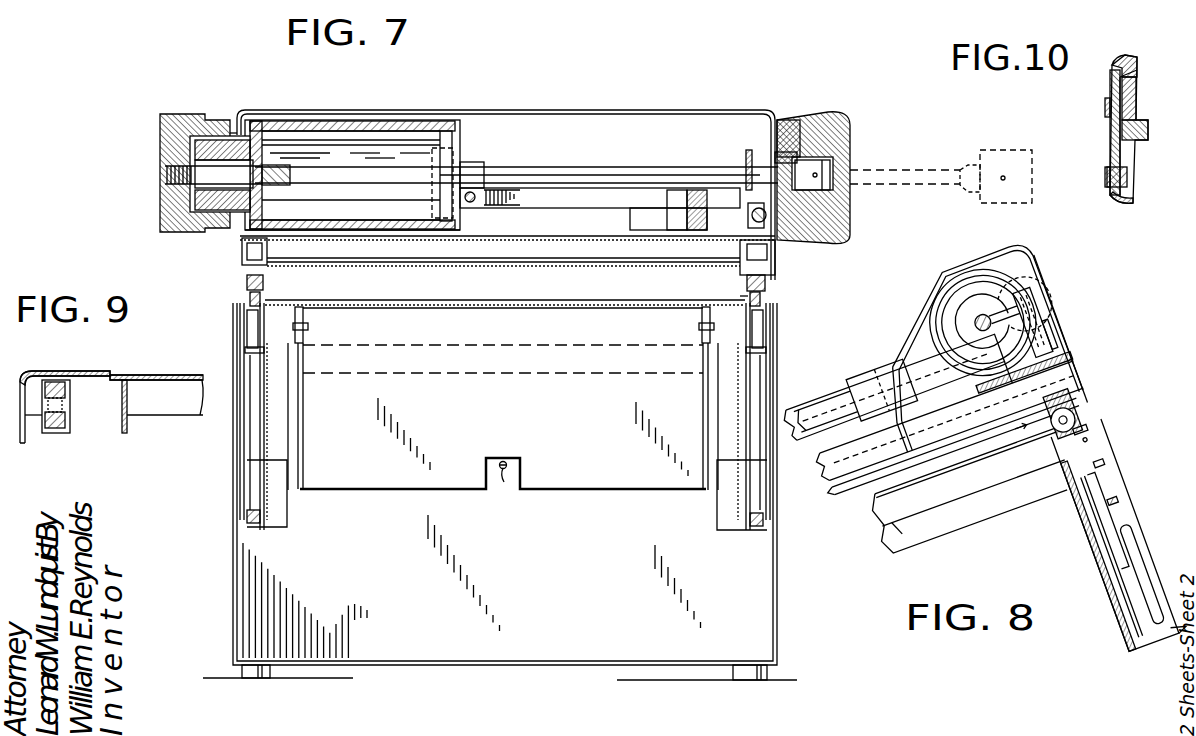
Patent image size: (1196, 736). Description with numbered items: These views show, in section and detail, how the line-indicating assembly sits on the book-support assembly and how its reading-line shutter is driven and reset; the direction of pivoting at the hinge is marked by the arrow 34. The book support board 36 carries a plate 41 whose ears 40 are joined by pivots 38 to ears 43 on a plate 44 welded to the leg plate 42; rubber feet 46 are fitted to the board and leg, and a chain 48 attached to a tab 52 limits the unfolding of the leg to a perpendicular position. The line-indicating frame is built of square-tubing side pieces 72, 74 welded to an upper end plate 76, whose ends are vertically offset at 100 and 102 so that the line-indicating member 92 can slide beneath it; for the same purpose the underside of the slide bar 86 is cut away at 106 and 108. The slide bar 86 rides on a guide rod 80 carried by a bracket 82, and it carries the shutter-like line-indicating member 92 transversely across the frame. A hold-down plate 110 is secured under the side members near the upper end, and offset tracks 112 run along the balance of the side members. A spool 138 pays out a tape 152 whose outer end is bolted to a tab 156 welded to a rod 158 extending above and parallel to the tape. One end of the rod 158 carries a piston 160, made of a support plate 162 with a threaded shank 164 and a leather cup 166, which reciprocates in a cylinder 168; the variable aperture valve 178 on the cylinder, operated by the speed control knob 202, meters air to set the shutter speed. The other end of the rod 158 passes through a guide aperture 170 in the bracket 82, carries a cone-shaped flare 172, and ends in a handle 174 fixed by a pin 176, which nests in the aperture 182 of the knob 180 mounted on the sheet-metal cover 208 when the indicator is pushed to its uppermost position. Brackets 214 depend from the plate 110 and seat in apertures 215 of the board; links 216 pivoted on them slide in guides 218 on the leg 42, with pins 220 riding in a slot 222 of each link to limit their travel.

In FIG. 7, the pivot direction arrow 34 is at (732, 292).
In FIG. 8, the pivot direction arrow 34 is at (1020, 427).
In FIG. 7, the book support board 36 is at (292, 300).
In FIG. 8, the book support board 36 is at (969, 492).
In FIG. 7, the pivots 38 is at (308, 327).
In FIG. 8, the pivots 38 is at (1082, 434).
In FIG. 7, the ears 40 is at (296, 314).
In FIG. 8, the ears 40 is at (897, 528).
In FIG. 7, the plate 41 is at (492, 307).
In FIG. 8, the plate 41 is at (966, 462).
In FIG. 7, the leg plate 42 is at (546, 561).
In FIG. 9, the leg plate 42 is at (152, 372).
In FIG. 8, the leg plate 42 is at (1119, 533).
In FIG. 7, the ears 43 is at (303, 358).
In FIG. 9, the ears 43 is at (130, 435).
In FIG. 7, the plate 44 is at (612, 421).
In FIG. 9, the plate 44 is at (148, 385).
In FIG. 7, the rubber feet 46 is at (262, 680).
In FIG. 7, the chain 48 is at (503, 482).
In FIG. 7, the tab 52 is at (512, 460).
In FIG. 7, the side piece 72 is at (240, 252).
In FIG. 7, the side piece 74 is at (768, 256).
In FIG. 8, the side piece 74 is at (973, 360).
In FIG. 7, the upper end plate 76 is at (522, 238).
In FIG. 8, the upper end plate 76 is at (948, 422).
In FIG. 7, the guide rod 80 is at (766, 218).
In FIG. 8, the guide rod 80 is at (826, 411).
In FIG. 7, the bracket 82 is at (750, 212).
In FIG. 8, the bracket 82 is at (1018, 354).
In FIG. 8, the slide bar 86 is at (896, 397).
In FIG. 8, the line-indicating member 92 is at (881, 390).
In FIG. 7, the offset 100 is at (275, 234).
In FIG. 7, the offset 102 is at (740, 246).
In FIG. 8, the cut-away 106 is at (830, 492).
In FIG. 8, the cut-away 108 is at (954, 419).
In FIG. 7, the plate 110 is at (576, 250).
In FIG. 8, the plate 110 is at (955, 446).
In FIG. 8, the tracks 112 is at (800, 421).
In FIG. 7, the spool 138 is at (650, 218).
In FIG. 7, the tape 152 is at (552, 198).
In FIG. 7, the tab 156 is at (472, 165).
In FIG. 7, the rod 158 is at (580, 170).
In FIG. 8, the rod 158 is at (1019, 327).
In FIG. 7, the piston 160 is at (290, 135).
In FIG. 10, the piston 160 is at (1146, 50).
In FIG. 10, the support plate 162 is at (1137, 82).
In FIG. 7, the threaded shank 164 is at (278, 186).
In FIG. 10, the threaded shank 164 is at (1145, 143).
In FIG. 7, the leather cup 166 is at (258, 125).
In FIG. 10, the leather cup 166 is at (1100, 70).
In FIG. 8, the leather cup 166 is at (997, 317).
In FIG. 7, the cylinder 168 is at (400, 123).
In FIG. 8, the cylinder 168 is at (983, 323).
In FIG. 8, the guide aperture 170 is at (982, 321).
In FIG. 7, the cone-shaped flare 172 is at (790, 122).
In FIG. 10, the cone-shaped flare 172 is at (962, 166).
In FIG. 7, the handle 174 is at (850, 162).
In FIG. 10, the handle 174 is at (1010, 150).
In FIG. 7, the pin 176 is at (850, 186).
In FIG. 7, the variable aperture valve 178 is at (218, 88).
In FIG. 7, the knob 180 is at (830, 118).
In FIG. 7, the aperture 182 is at (776, 156).
In FIG. 7, the speed control knob 202 is at (178, 118).
In FIG. 7, the cover 208 is at (588, 112).
In FIG. 8, the cover 208 is at (969, 347).
In FIG. 7, the brackets 214 is at (247, 280).
In FIG. 8, the brackets 214 is at (1062, 414).
In FIG. 8, the apertures 215 is at (1063, 420).
In FIG. 7, the links 216 is at (247, 316).
In FIG. 9, the links 216 is at (62, 380).
In FIG. 8, the links 216 is at (1108, 520).
In FIG. 7, the guides 218 is at (288, 492).
In FIG. 9, the guides 218 is at (70, 430).
In FIG. 8, the guides 218 is at (1112, 556).
In FIG. 7, the pins 220 is at (247, 350).
In FIG. 8, the pins 220 is at (1098, 463).
In FIG. 9, the slot 222 is at (58, 435).
In FIG. 8, the slot 222 is at (1112, 500).